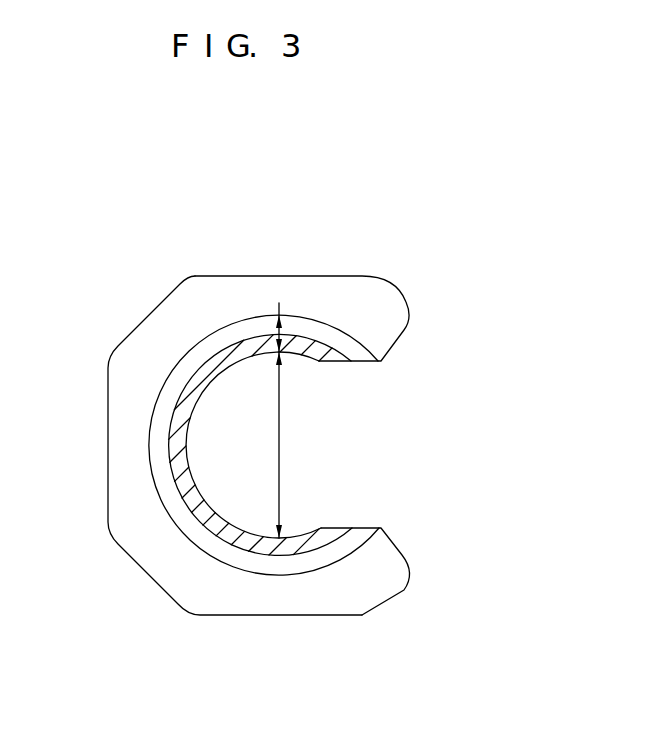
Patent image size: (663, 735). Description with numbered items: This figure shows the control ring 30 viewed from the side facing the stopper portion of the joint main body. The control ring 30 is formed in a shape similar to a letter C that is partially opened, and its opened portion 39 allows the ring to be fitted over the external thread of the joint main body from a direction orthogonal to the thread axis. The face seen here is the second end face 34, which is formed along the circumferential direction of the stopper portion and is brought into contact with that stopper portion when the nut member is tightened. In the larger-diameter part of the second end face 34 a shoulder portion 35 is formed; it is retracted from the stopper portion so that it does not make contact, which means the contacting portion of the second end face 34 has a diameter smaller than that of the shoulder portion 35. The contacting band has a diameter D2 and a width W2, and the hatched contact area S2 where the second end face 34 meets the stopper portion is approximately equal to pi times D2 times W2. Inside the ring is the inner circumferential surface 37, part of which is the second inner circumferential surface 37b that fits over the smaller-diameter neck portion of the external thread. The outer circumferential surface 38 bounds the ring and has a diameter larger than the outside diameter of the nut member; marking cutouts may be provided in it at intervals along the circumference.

The control ring 30 is at (224, 252).
The second end face 34 is at (193, 477).
The shoulder portion 35 is at (163, 380).
The inner circumferential surface 37 is at (309, 362).
The second inner circumferential surface 37b is at (250, 445).
The outer circumferential surface 38 is at (283, 276).
The opened portion 39 is at (367, 528).
The contact area S2 is at (203, 372).
The width of the second end face W2 is at (300, 330).
The diameter of the second end face D2 is at (280, 455).